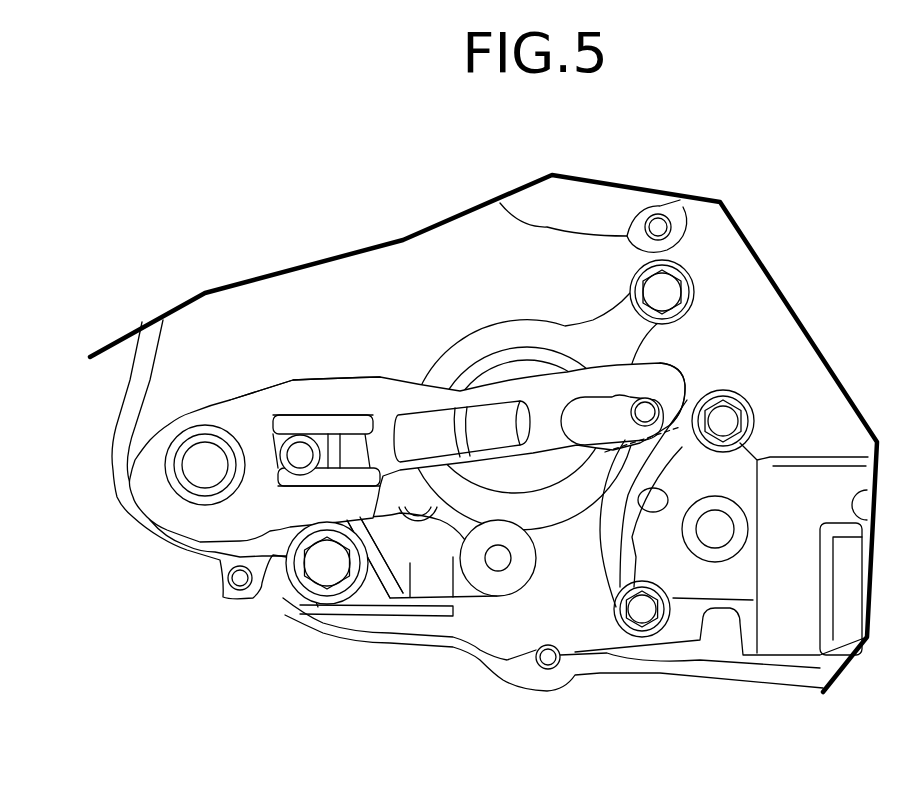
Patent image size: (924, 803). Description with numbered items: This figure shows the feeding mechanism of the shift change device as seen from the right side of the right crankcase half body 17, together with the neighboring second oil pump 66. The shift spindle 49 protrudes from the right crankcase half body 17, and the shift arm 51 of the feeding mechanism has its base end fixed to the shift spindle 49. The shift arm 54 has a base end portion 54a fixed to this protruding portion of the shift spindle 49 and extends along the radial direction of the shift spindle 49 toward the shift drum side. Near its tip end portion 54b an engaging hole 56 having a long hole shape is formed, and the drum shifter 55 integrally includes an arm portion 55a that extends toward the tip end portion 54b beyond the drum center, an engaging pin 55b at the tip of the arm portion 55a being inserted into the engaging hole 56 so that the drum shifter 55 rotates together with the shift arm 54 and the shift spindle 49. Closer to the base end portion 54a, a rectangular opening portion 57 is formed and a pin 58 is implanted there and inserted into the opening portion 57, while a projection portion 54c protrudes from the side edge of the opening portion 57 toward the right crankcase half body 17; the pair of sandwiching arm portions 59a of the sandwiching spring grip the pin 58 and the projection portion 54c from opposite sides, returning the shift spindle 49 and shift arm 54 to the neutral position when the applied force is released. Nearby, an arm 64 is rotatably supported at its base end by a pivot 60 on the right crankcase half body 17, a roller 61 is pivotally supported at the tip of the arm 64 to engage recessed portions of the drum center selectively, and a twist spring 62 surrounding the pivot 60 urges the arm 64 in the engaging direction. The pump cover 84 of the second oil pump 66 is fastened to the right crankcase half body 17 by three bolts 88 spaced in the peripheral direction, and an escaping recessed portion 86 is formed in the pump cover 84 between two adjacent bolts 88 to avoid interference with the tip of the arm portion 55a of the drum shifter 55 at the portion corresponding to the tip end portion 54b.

The right crankcase half body 17 is at (437, 640).
The shift spindle 49 is at (203, 478).
The shift arm 51 is at (293, 378).
The shift arm 54 is at (380, 373).
The base end portion 54a is at (157, 477).
The tip end portion 54b is at (680, 392).
The projection portion 54c is at (356, 450).
The drum shifter 55 is at (520, 370).
The arm portion 55a is at (580, 420).
The engaging pin 55b is at (580, 504).
The engaging hole 56 is at (675, 386).
The opening portion 57 is at (353, 418).
The pin 58 is at (293, 460).
The sandwiching arm portions 59a is at (305, 420).
The pivot 60 is at (327, 565).
The roller 61 is at (510, 600).
The twist spring 62 is at (438, 612).
The arm 64 is at (463, 583).
The second oil pump 66 is at (790, 405).
The pump cover 84 is at (713, 592).
The escaping recessed portion 86 is at (650, 513).
The bolts 88 is at (730, 428).